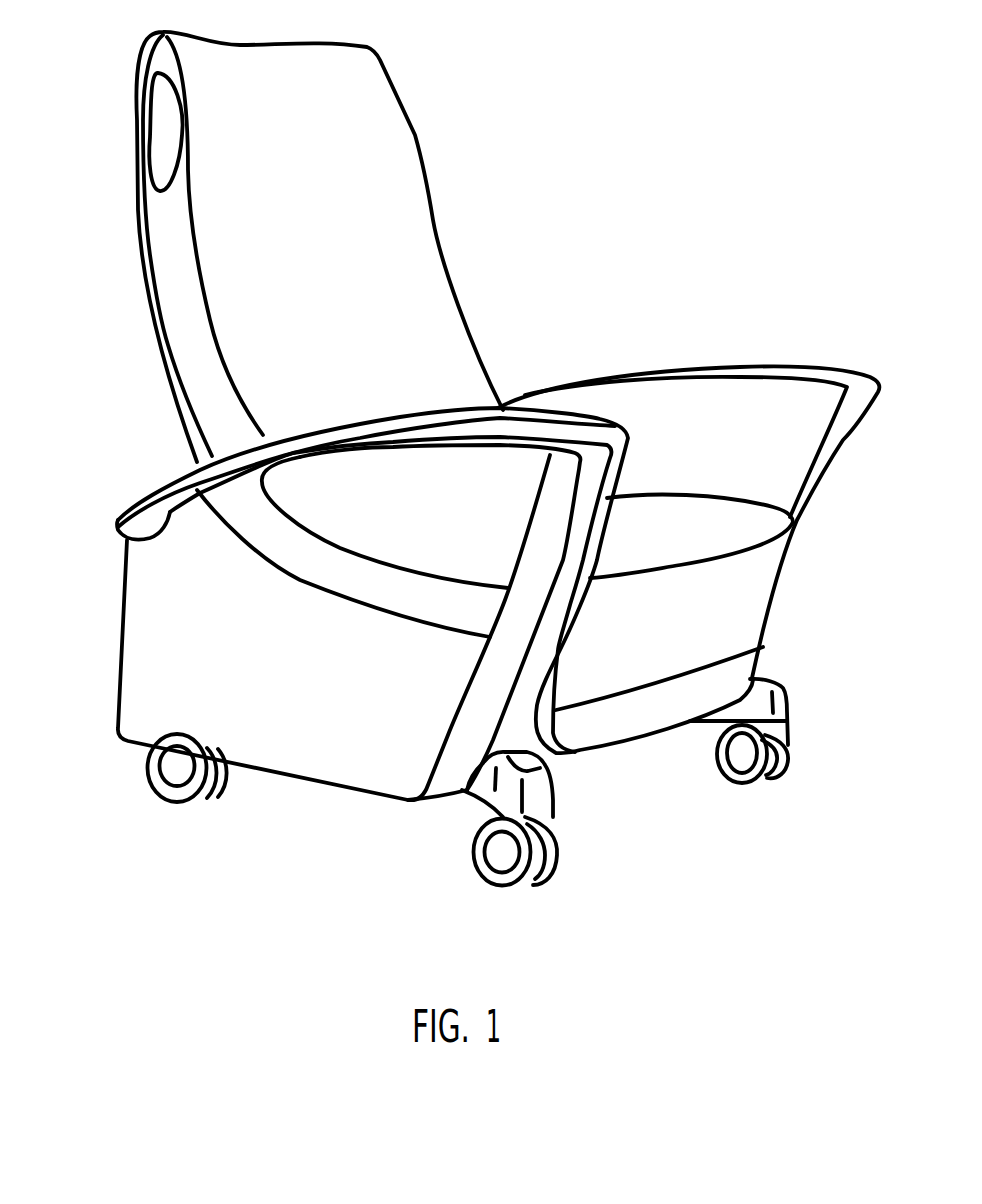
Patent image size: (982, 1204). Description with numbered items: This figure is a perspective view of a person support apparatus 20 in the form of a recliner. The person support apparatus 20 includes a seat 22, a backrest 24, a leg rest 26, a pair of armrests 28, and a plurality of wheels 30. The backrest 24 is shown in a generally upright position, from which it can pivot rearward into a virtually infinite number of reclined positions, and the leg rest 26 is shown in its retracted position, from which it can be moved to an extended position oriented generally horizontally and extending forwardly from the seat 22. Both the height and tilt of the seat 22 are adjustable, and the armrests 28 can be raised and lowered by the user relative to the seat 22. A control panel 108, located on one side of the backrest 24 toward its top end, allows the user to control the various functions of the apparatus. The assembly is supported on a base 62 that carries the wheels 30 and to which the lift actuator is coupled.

The person support apparatus 20 is at (440, 222).
The control panel 108 is at (158, 126).
The backrest 24 is at (222, 240).
The armrest 28 is at (160, 480).
The seat 22 is at (690, 517).
The leg rest 26 is at (640, 717).
The base 62 is at (760, 680).
The wheel 30 is at (163, 793).